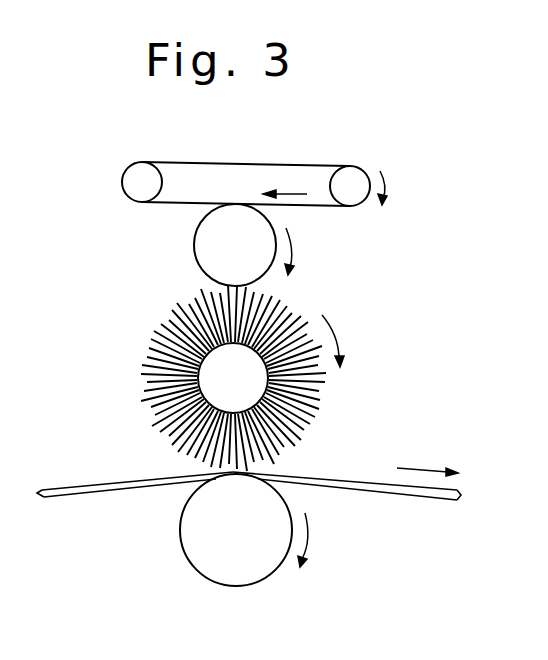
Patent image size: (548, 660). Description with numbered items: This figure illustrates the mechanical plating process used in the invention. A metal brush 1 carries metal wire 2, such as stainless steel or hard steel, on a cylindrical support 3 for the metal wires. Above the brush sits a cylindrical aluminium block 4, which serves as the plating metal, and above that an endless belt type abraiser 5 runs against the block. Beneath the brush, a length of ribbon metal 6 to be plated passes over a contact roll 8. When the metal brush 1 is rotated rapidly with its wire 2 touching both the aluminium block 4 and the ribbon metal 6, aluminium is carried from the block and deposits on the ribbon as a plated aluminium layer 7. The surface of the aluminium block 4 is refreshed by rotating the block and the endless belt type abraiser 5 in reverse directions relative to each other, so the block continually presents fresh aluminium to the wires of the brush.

The metal brush 1 is at (245, 378).
The metal wire 2 is at (313, 380).
The cylindrical support for metal wires 3 is at (247, 382).
The cylindrical aluminium block 4 is at (216, 248).
The endless belt type abraiser 5 is at (110, 155).
The ribbon metal to be plated 6 is at (113, 485).
The plated aluminium layer 7 is at (363, 478).
The contact roll 8 is at (265, 555).